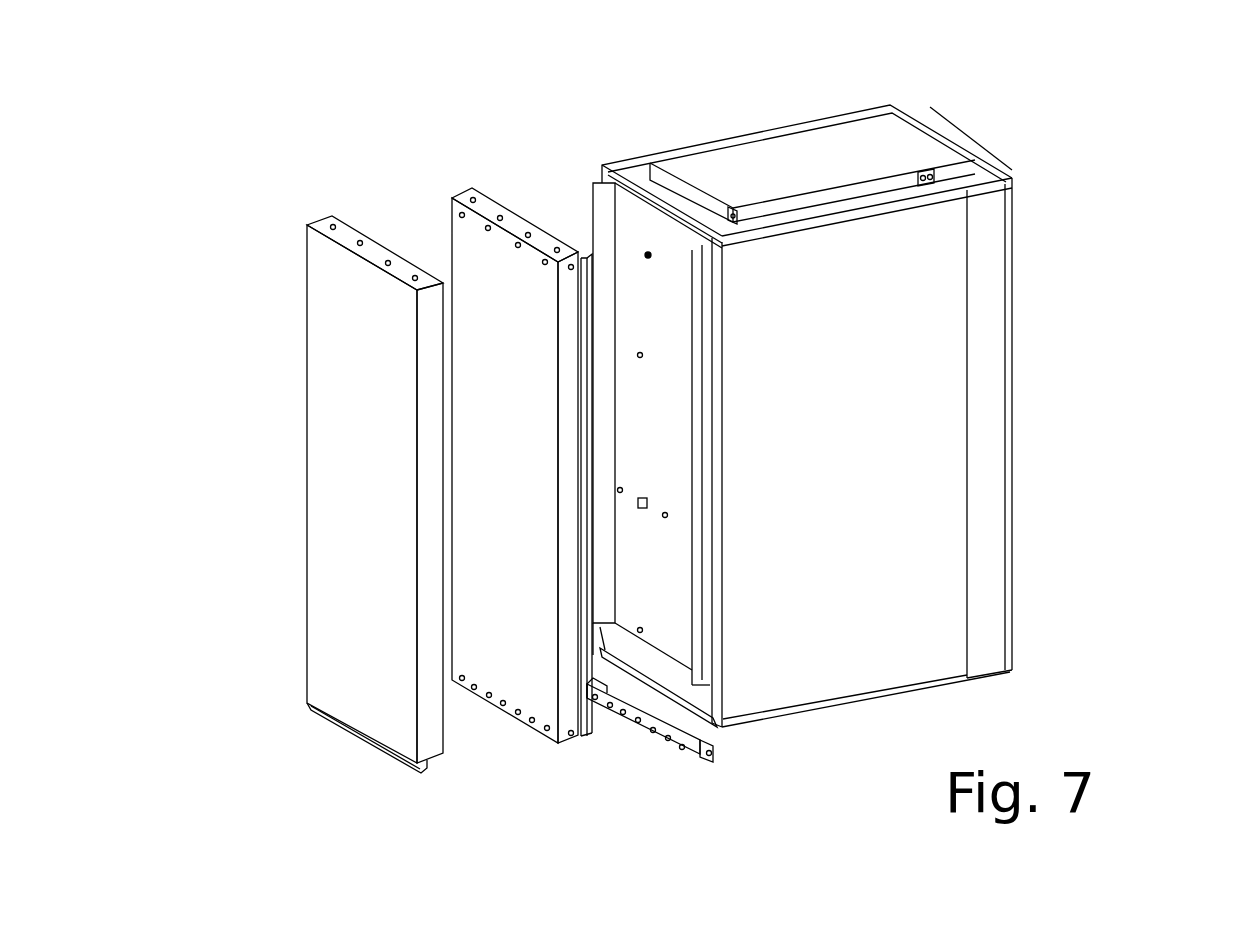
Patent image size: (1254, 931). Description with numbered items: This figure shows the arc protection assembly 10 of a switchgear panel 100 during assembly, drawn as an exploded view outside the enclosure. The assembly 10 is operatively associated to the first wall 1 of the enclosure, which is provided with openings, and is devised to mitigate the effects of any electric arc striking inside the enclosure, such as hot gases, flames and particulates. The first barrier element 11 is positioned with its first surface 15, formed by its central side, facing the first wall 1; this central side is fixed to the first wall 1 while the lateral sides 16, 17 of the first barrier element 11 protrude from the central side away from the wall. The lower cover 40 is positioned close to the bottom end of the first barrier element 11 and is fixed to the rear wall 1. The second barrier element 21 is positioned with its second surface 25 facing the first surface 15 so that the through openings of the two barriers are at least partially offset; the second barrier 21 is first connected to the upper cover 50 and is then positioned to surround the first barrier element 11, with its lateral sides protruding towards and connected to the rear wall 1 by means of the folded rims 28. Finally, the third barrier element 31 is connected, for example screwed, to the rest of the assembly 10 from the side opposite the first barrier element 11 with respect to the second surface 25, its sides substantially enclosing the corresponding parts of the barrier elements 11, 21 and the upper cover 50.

The first wall 1 is at (607, 176).
The arc protection assembly 10 is at (428, 151).
The first barrier element 11 is at (580, 165).
The first surface 15 is at (650, 250).
The lateral side of first barrier element 16 is at (597, 222).
The lateral side of first barrier element 17 is at (702, 318).
The second barrier element 21 is at (427, 203).
The second surface 25 is at (505, 638).
The folded rims 28 is at (592, 736).
The third barrier element 31 is at (349, 491).
The lower cover 40 is at (686, 757).
The upper cover 50 is at (487, 189).
The switchgear panel 100 is at (1123, 330).